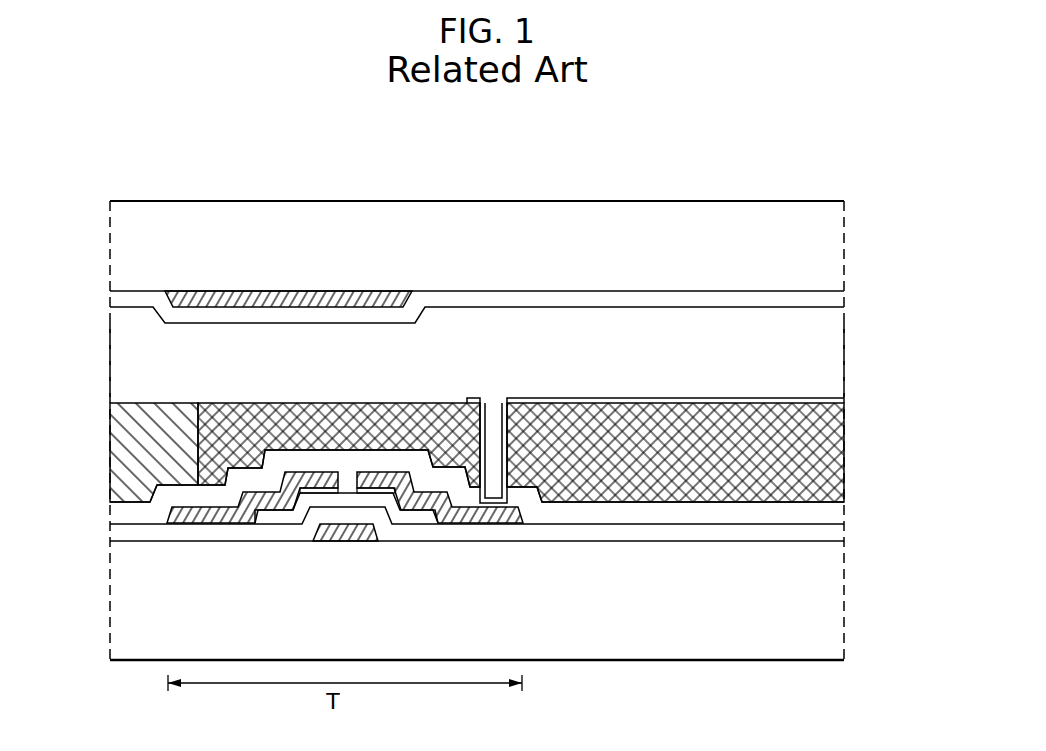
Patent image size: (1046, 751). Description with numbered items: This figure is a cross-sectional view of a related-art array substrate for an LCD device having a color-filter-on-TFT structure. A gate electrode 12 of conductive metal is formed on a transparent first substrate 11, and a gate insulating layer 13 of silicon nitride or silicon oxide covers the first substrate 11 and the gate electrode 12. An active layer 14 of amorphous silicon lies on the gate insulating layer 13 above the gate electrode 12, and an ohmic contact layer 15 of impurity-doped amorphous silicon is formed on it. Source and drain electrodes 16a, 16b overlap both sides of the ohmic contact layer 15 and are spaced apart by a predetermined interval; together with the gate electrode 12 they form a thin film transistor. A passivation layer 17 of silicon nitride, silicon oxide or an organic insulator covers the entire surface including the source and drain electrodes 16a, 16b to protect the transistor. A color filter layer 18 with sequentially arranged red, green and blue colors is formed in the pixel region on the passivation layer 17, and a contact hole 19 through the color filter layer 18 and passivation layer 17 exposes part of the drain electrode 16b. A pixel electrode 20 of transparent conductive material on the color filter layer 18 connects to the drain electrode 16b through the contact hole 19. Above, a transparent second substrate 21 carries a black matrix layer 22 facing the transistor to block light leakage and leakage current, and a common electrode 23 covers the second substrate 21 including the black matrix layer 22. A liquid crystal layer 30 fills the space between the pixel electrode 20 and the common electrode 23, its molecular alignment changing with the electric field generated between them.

The transparent first substrate 11 is at (832, 597).
The gate electrode 12 is at (347, 535).
The gate insulating layer 13 is at (834, 533).
The active layer 14 is at (347, 495).
The ohmic contact layer 15 is at (306, 488).
The source electrode 16a is at (250, 492).
The drain electrode 16b is at (437, 493).
The passivation layer 17 is at (120, 511).
The color filter layer 18 is at (118, 441).
The contact hole 19 is at (492, 396).
The pixel electrode 20 is at (826, 401).
The transparent second substrate 21 is at (447, 212).
The black matrix layer 22 is at (280, 293).
The common electrode 23 is at (596, 302).
The liquid crystal layer 30 is at (833, 345).